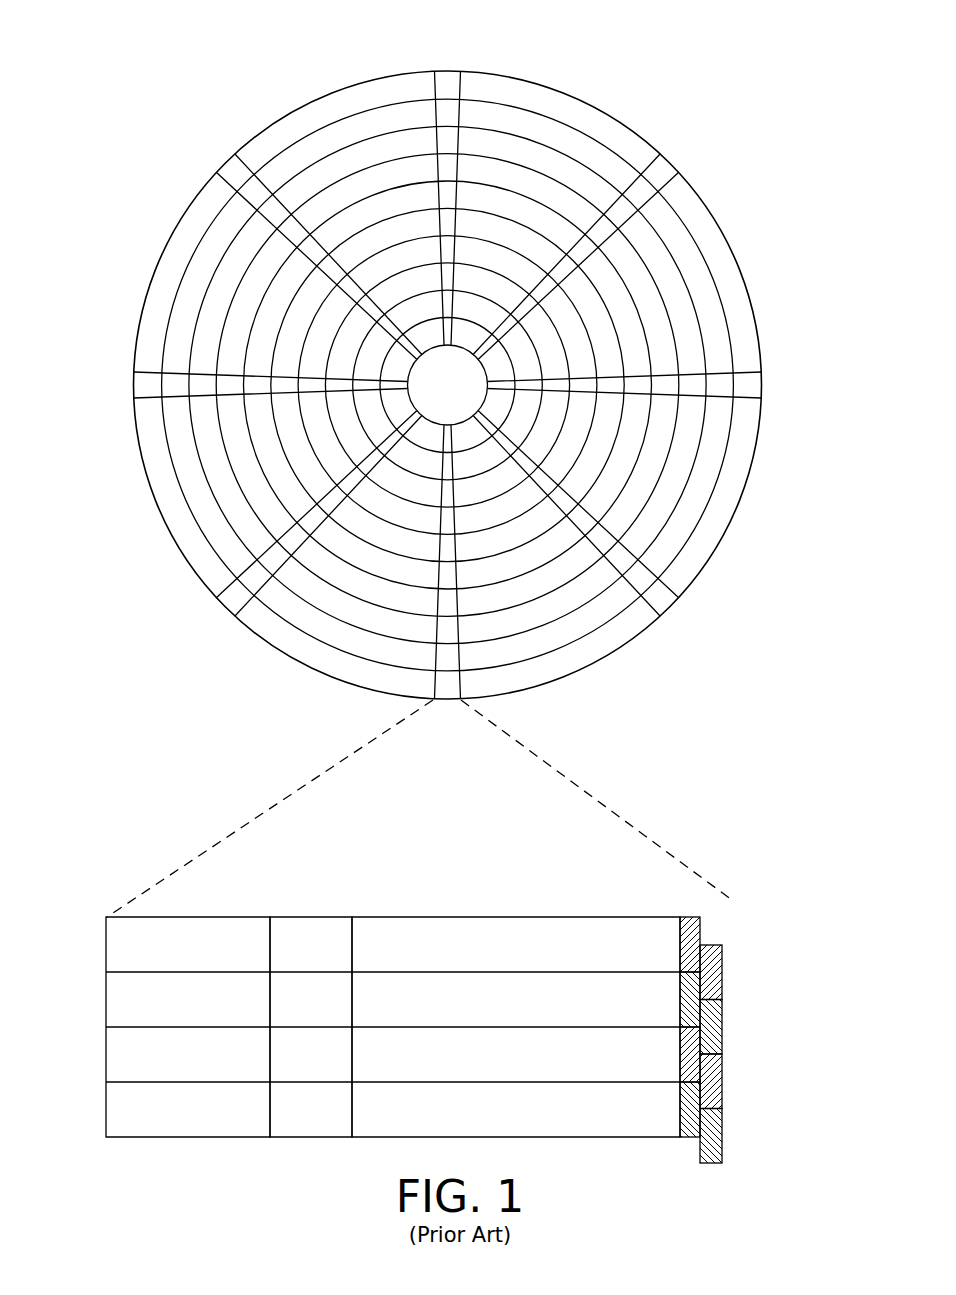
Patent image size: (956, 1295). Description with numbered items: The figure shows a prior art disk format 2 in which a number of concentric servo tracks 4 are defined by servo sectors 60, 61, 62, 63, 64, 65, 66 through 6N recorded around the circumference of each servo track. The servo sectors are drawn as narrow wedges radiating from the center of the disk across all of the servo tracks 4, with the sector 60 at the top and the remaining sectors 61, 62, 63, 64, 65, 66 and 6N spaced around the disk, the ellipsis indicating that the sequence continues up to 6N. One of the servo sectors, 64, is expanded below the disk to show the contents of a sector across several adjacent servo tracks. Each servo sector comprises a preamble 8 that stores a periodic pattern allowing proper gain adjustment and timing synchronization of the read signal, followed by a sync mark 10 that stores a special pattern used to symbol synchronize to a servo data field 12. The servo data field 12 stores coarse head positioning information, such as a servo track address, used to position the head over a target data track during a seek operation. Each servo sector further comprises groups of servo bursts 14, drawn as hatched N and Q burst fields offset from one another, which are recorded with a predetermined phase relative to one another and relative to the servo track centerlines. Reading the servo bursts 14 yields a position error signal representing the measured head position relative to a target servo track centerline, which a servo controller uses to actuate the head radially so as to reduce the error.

The disk format 2 is at (212, 74).
The servo tracks 4 is at (553, 134).
The servo sector 60 is at (447, 82).
The servo sector 61 is at (662, 170).
The servo sector 62 is at (753, 385).
The servo sector 63 is at (665, 603).
The servo sector 64 is at (307, 772).
The servo sector 65 is at (232, 603).
The servo sector 66 is at (140, 383).
The servo sector 6N is at (231, 169).
The preamble 8 is at (197, 917).
The sync mark 10 is at (313, 917).
The servo data field 12 is at (505, 917).
The servo bursts 14 is at (717, 917).